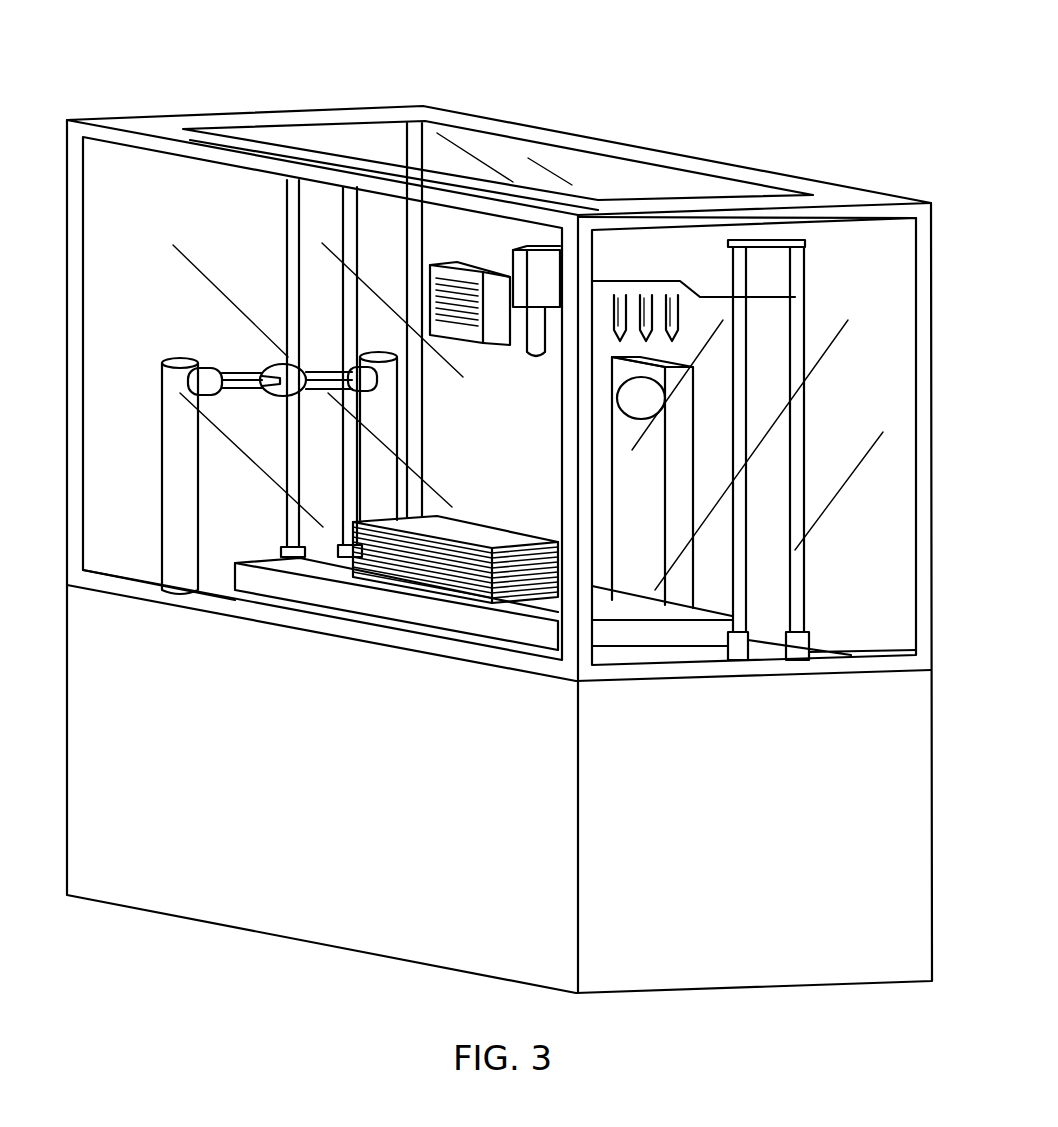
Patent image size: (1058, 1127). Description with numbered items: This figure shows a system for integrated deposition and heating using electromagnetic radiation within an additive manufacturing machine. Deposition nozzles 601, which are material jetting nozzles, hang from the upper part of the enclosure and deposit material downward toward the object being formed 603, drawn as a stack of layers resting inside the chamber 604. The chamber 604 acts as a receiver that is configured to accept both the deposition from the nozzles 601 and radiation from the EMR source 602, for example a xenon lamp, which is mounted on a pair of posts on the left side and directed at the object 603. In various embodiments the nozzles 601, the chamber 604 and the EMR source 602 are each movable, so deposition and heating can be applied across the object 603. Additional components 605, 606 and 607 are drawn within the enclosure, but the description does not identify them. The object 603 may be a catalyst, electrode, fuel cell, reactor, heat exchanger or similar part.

The deposition nozzles 601 is at (623, 292).
The EMR source 602 is at (267, 368).
The object being formed 603 is at (387, 563).
The chamber 604 is at (450, 620).
The drive block 605 is at (540, 263).
The louvered unit 606 is at (433, 267).
The sensor box 607 is at (647, 400).